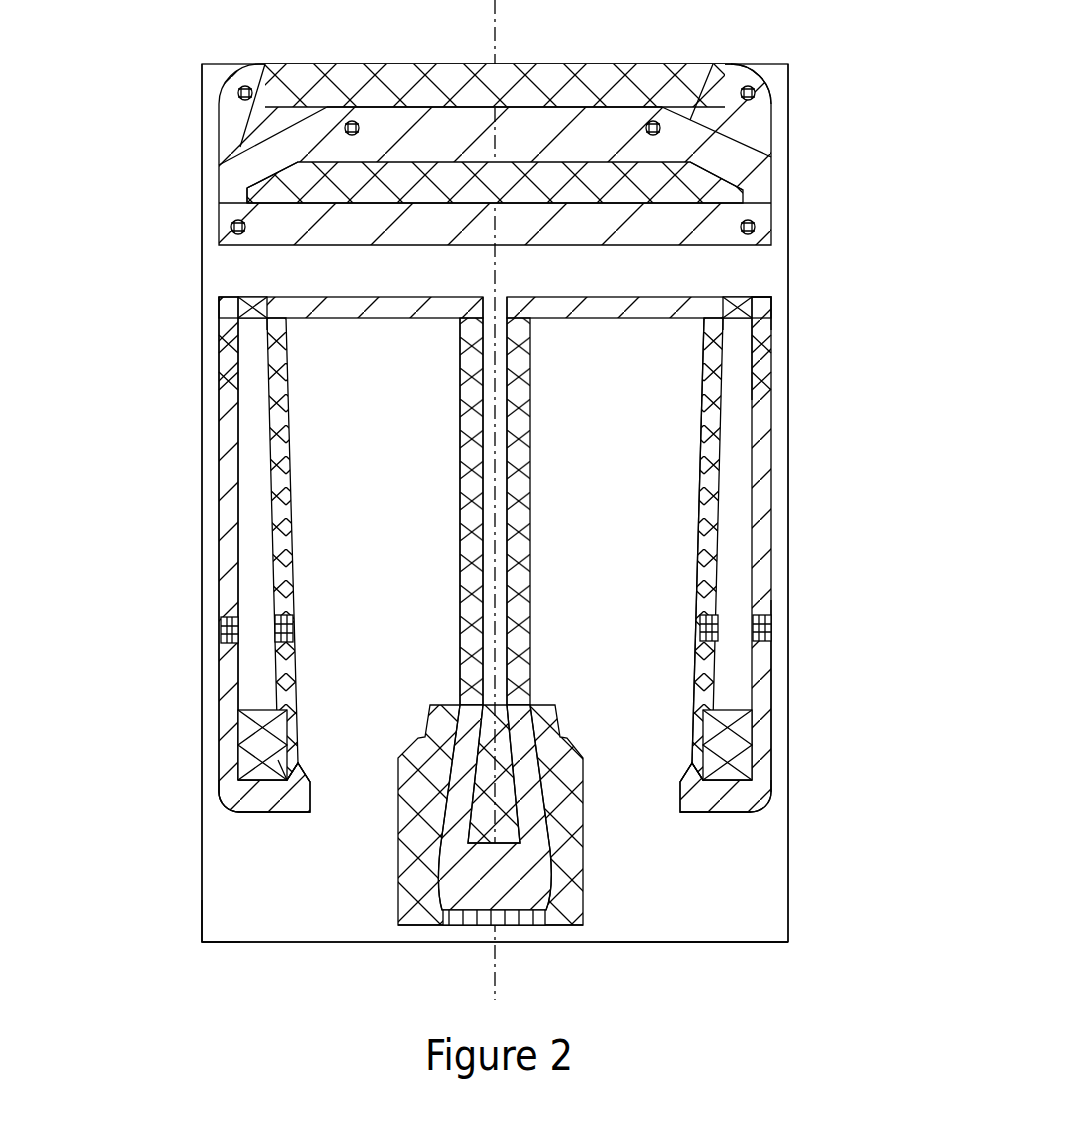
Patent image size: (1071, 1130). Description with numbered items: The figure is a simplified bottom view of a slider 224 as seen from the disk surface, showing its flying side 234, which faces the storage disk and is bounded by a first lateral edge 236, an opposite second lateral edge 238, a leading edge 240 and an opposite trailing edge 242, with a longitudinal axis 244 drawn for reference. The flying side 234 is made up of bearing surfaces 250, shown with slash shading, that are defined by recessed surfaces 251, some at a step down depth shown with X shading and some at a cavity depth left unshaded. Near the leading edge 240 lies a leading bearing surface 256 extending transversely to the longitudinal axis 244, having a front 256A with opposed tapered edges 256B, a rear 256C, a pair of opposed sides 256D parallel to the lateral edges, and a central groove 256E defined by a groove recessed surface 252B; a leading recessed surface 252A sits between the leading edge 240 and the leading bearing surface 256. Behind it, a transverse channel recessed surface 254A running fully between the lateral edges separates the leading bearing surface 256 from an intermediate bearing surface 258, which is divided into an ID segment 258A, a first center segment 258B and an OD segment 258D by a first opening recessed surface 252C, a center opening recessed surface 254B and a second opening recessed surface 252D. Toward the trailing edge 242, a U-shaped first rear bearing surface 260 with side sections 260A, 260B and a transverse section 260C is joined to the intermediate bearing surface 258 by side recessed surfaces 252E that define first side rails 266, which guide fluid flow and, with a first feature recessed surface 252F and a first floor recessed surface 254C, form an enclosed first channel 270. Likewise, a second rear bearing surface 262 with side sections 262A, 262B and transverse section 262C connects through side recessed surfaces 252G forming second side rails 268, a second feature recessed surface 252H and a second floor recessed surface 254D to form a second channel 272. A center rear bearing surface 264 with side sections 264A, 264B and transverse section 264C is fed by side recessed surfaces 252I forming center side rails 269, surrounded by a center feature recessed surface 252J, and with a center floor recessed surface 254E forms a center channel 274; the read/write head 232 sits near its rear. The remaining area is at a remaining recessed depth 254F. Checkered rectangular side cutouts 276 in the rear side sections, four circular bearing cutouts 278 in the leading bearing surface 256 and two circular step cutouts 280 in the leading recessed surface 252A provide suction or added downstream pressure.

The slider 224 is at (800, 54).
The read/write head 232 is at (528, 925).
The flying side 234 is at (759, 880).
The first lateral edge 236 is at (203, 502).
The second lateral edge 238 is at (788, 445).
The leading edge 240 is at (590, 76).
The trailing edge 242 is at (257, 942).
The longitudinal axis 244 is at (495, 985).
The bearing surfaces 250 is at (770, 168).
The recessed surfaces 251 is at (763, 117).
The leading recessed surface 252A is at (440, 80).
The groove recessed surface 252B is at (514, 170).
The first opening recessed surface 252C is at (245, 297).
The second opening recessed surface 252D is at (733, 322).
The side recessed surfaces 252E is at (268, 430).
The first feature recessed surface 252F is at (258, 742).
The side recessed surfaces 252G is at (765, 387).
The second feature recessed surface 252H is at (748, 725).
The side recessed surfaces 252I is at (527, 470).
The center feature recessed surface 252J is at (452, 822).
The channel recessed surface 254A is at (683, 268).
The center opening recessed surface 254B is at (497, 312).
The first floor recessed surface 254C is at (250, 542).
The second floor recessed surface 254D is at (740, 521).
The center floor recessed surface 254E is at (490, 598).
The remaining recessed depth 254F is at (215, 942).
The leading bearing surface 256 is at (757, 197).
The front 256A is at (362, 105).
The tapered edges 256B is at (300, 112).
The rear 256C is at (288, 247).
The opposed sides 256D is at (219, 203).
The groove 256E is at (248, 183).
The intermediate bearing surface 258 is at (786, 316).
The ID segment 258A is at (218, 305).
The first center segment 258B is at (253, 360).
The OD segment 258D is at (767, 299).
The first rear bearing surface 260 is at (208, 790).
The side section 260A is at (232, 675).
The side section 260B is at (282, 695).
The transverse section 260C is at (242, 803).
The second rear bearing surface 262 is at (784, 743).
The side section 262A is at (763, 683).
The side section 262B is at (710, 653).
The transverse section 262C is at (730, 807).
The center rear bearing surface 264 is at (561, 877).
The side section 264A is at (402, 823).
The side section 264B is at (523, 767).
The transverse section 264C is at (440, 915).
The first side rails 266 is at (210, 347).
The second side rails 268 is at (779, 362).
The center side rails 269 is at (534, 572).
The first channel 270 is at (263, 790).
The second channel 272 is at (759, 765).
The center channel 274 is at (513, 851).
The side cutout 276 is at (275, 643).
The bearing cutouts 278 is at (230, 227).
The step cutouts 280 is at (240, 92).